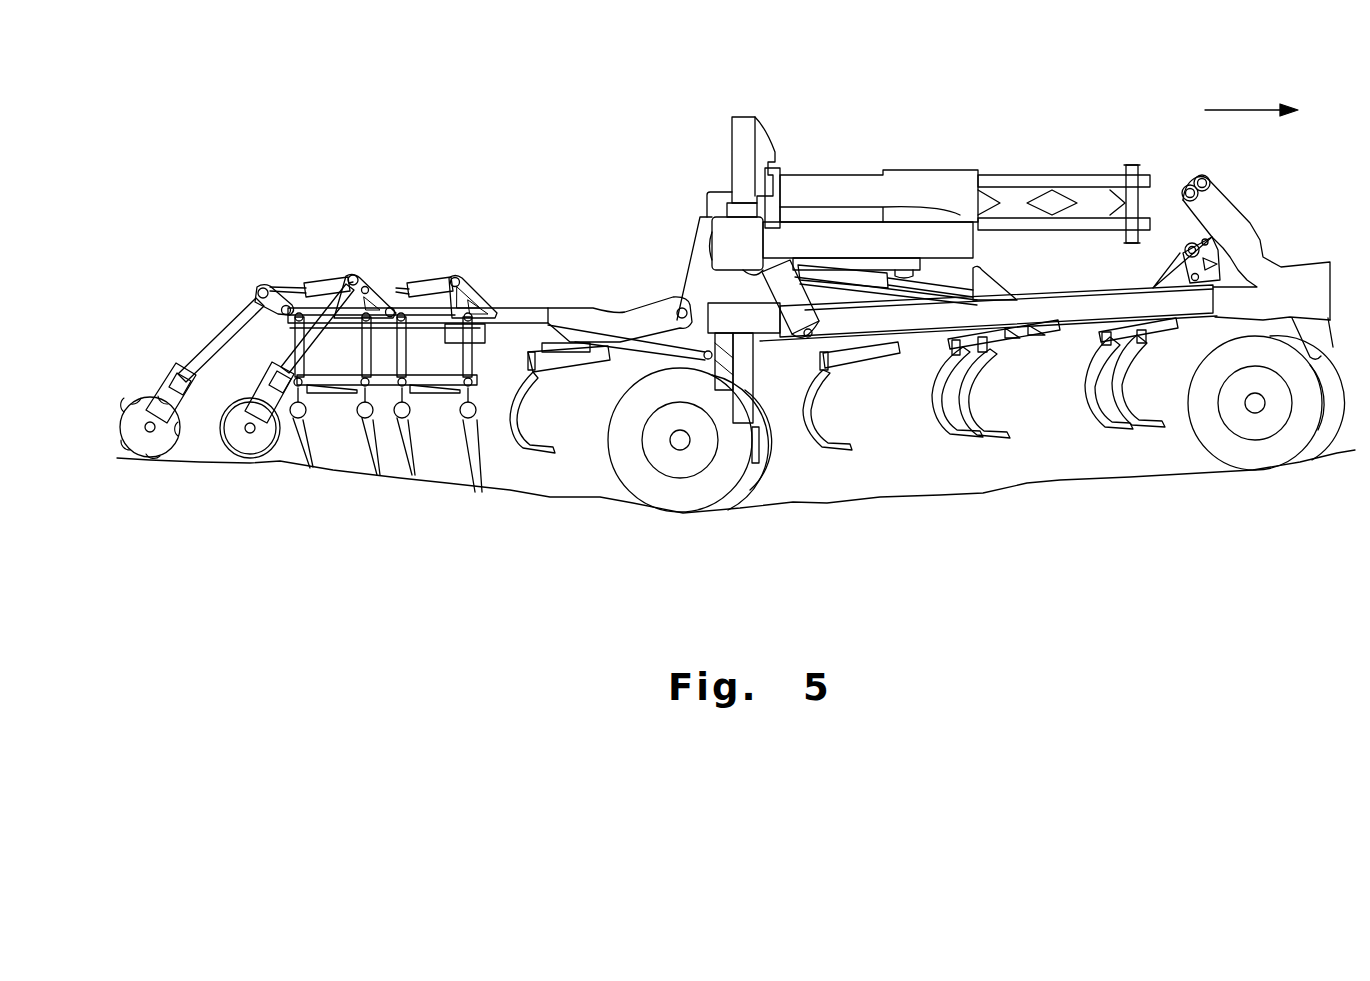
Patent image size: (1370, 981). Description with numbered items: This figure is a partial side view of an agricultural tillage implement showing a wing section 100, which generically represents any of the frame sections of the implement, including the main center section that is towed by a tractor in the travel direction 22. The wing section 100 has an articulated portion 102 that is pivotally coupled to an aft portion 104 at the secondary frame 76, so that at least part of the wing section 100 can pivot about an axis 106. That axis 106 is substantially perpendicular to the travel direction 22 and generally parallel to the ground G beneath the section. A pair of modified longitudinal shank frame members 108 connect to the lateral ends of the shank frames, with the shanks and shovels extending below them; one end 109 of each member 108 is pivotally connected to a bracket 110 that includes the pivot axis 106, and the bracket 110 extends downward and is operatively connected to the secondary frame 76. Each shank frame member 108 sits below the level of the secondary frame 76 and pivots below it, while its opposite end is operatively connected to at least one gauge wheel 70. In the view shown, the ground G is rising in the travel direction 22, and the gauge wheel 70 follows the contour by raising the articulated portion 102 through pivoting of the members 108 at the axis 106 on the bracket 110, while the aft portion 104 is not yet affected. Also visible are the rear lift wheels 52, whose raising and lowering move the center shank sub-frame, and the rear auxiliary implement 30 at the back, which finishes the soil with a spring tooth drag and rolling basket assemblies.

The travel direction 22 is at (1248, 108).
The rear auxiliary implement 30 is at (272, 262).
The rear lift wheels 52 is at (607, 423).
The gauge wheel 70 is at (1200, 445).
The secondary frame 76 is at (722, 234).
The wing section 100 is at (915, 130).
The articulated portion 102 is at (1262, 205).
The aft portion 104 is at (457, 235).
The axis 106 is at (842, 345).
The modified longitudinal shank frame member 108 is at (1077, 313).
The end 109 is at (906, 299).
The bracket 110 is at (774, 307).
The ground G is at (983, 497).